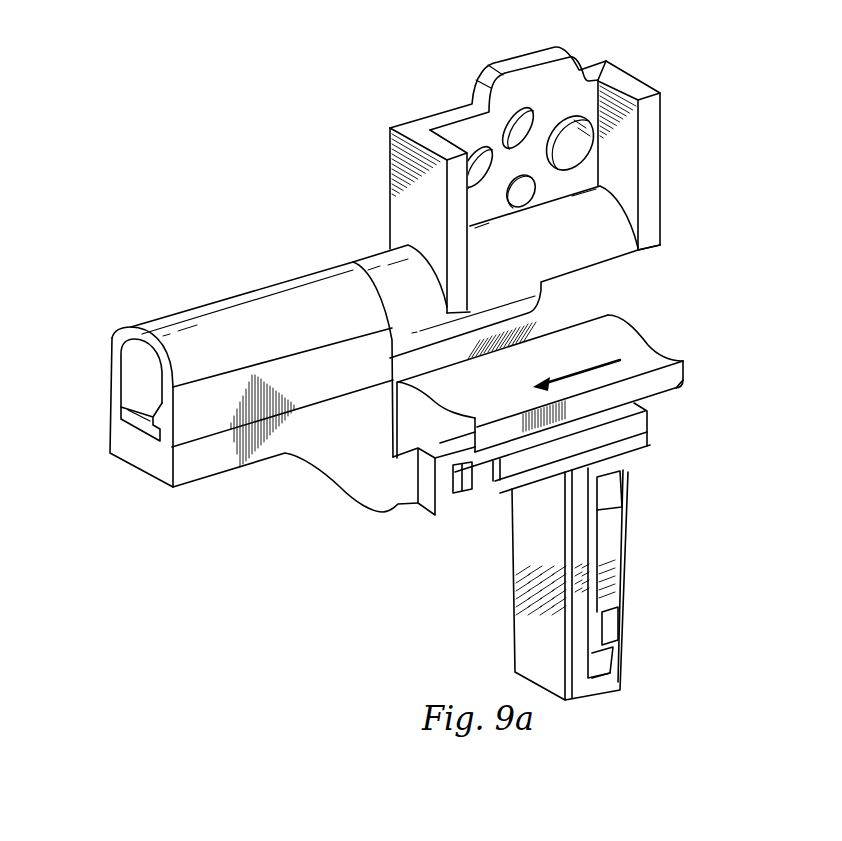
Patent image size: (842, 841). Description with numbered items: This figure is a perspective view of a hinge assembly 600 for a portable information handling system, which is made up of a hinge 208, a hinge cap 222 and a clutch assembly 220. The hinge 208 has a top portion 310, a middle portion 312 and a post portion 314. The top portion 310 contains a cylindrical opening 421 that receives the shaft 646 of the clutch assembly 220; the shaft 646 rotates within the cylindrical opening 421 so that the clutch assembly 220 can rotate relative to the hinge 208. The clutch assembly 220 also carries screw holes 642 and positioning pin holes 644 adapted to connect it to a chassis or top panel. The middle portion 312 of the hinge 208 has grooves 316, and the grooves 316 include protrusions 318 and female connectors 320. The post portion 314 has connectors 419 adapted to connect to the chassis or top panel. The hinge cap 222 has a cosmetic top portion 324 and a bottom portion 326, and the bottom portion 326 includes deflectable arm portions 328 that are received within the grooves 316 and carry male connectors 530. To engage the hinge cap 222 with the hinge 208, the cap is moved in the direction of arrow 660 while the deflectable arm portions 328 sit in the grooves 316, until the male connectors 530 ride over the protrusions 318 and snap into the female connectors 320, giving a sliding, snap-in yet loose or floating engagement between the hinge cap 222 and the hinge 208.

The hinge assembly 600 is at (280, 149).
The hinge 208 is at (238, 291).
The cylindrical opening 421 is at (136, 378).
The top portion 310 is at (207, 468).
The shaft 646 is at (383, 264).
The clutch assembly 220 is at (431, 105).
The screw holes 642 is at (560, 133).
The positioning pin holes 644 is at (536, 152).
The hinge cap 222 is at (694, 365).
The middle portion 312 is at (413, 432).
The cosmetic top portion 324 is at (652, 357).
The bottom portion 326 is at (658, 416).
The arrow 660 is at (592, 368).
The female connectors 320 is at (415, 476).
The protrusions 318 is at (465, 484).
The grooves 316 is at (486, 481).
The male connectors 530 is at (542, 478).
The deflectable arm portions 328 is at (574, 453).
The post portion 314 is at (528, 649).
The connectors 419 is at (620, 490).